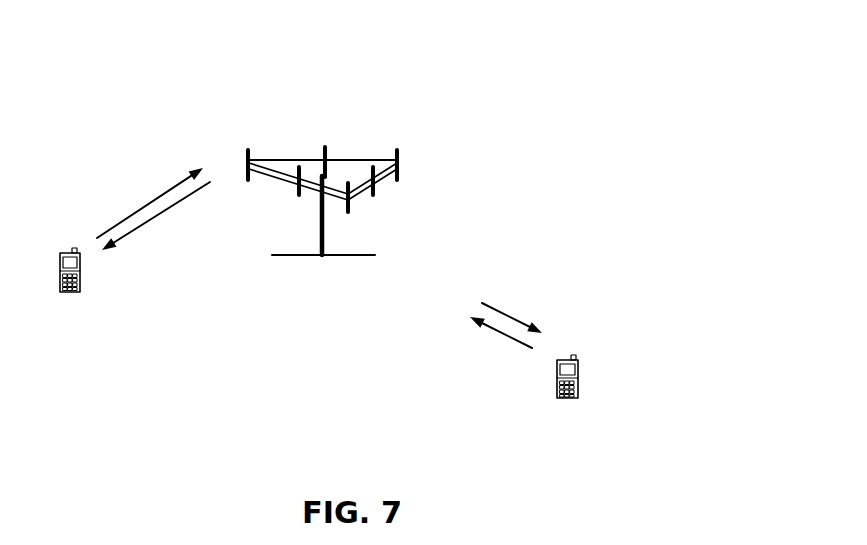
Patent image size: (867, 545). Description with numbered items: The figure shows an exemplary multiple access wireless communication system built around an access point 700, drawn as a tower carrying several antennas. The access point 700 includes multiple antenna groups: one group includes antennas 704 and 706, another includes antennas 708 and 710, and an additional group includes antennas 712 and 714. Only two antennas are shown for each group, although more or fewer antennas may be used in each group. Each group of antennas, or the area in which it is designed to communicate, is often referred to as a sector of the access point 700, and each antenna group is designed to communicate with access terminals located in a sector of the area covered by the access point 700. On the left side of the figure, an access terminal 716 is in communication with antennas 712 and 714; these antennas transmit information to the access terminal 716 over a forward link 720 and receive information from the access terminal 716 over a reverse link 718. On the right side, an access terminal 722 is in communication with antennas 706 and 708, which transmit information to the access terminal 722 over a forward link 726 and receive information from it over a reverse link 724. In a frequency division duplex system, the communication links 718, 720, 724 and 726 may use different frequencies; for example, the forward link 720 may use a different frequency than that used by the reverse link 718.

The access point 700 is at (307, 255).
The antenna 704 is at (349, 212).
The antenna 706 is at (375, 195).
The antenna 708 is at (399, 178).
The antenna 710 is at (326, 148).
The antenna 712 is at (249, 158).
The antenna 714 is at (299, 195).
The access terminal 716 is at (73, 249).
The reverse link 718 is at (148, 203).
The forward link 720 is at (165, 208).
The access terminal 722 is at (573, 356).
The reverse link 724 is at (492, 326).
The forward link 726 is at (513, 321).